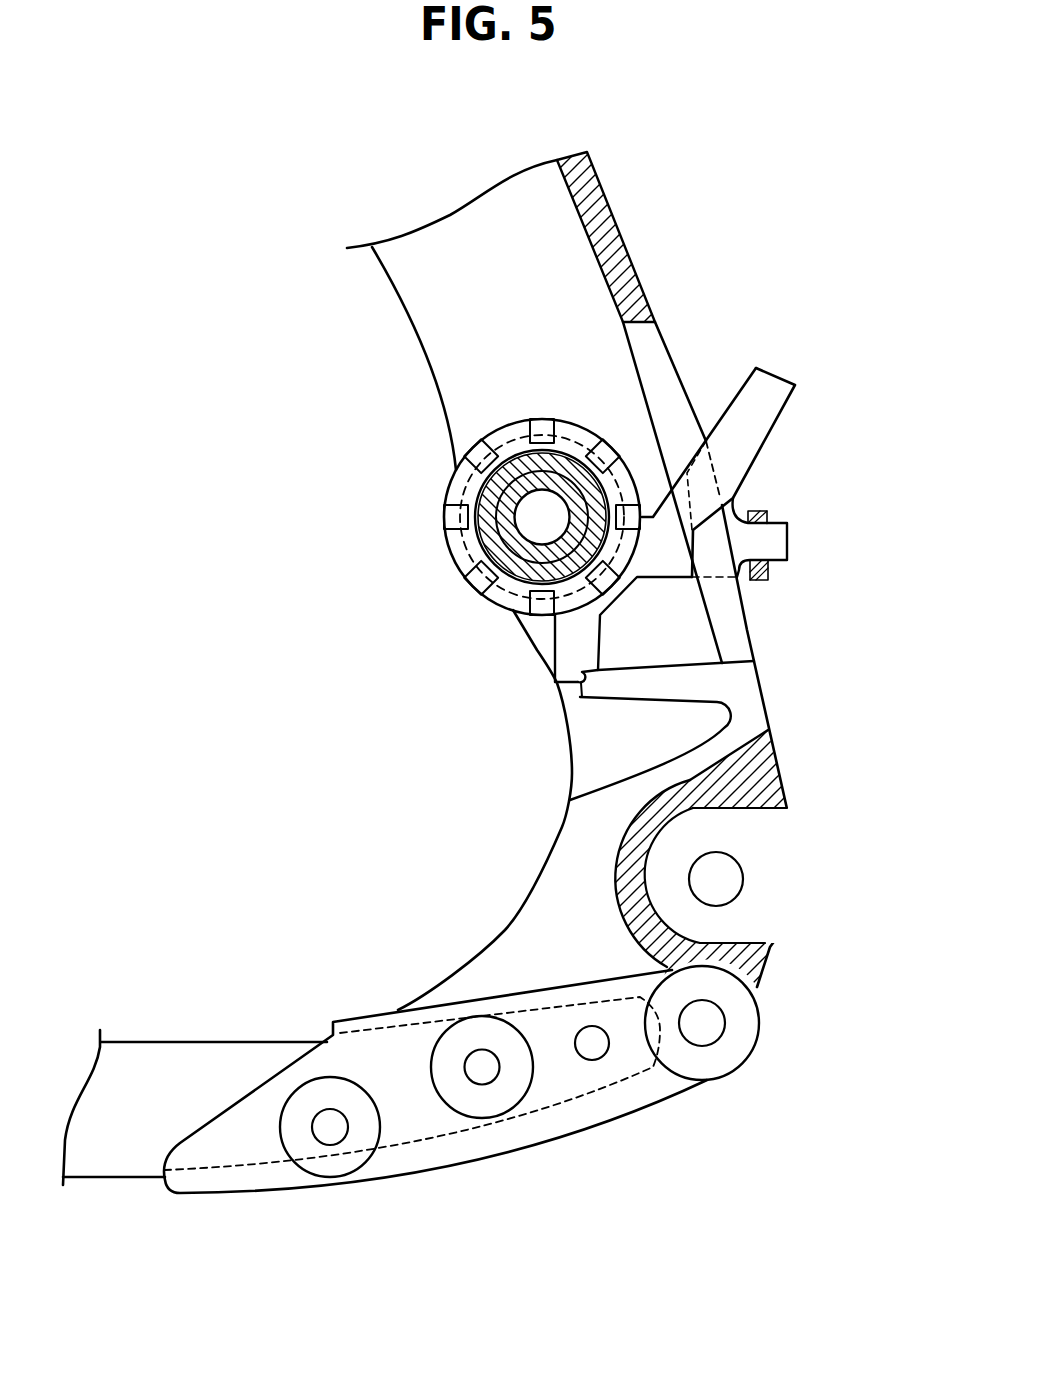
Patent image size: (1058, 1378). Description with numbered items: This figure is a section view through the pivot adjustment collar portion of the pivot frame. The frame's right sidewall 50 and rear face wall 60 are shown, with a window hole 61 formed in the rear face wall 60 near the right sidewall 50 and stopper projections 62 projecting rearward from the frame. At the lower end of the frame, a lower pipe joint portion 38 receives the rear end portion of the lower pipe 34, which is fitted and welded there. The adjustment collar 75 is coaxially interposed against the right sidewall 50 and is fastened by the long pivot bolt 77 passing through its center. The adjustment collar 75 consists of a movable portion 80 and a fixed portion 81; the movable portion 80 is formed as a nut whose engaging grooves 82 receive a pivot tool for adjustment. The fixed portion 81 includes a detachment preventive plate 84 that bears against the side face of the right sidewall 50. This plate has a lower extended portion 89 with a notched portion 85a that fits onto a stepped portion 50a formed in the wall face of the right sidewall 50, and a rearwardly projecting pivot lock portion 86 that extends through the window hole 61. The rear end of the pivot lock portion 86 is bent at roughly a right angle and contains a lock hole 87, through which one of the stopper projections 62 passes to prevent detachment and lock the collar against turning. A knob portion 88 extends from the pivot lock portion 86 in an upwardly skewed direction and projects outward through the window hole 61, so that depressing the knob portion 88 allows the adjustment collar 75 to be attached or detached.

The lower pipe 34 is at (193, 1040).
The lower pipe joint portions 38 is at (340, 1018).
The right sidewall 50 is at (427, 295).
The stepped portion 50a is at (580, 697).
The rear face wall 60 is at (640, 251).
The window hole 61 is at (676, 364).
The stopper projections 62 is at (787, 544).
The adjustment collar 75 is at (392, 576).
The pivot bolt 77 is at (557, 480).
The movable portion 80 is at (450, 487).
The fixed portion 81 is at (467, 580).
The engaging grooves 82 is at (458, 452).
The detachment preventive plate 84 is at (660, 572).
The notched portion 85a is at (576, 674).
The pivot lock portion 86 is at (760, 509).
The lock hole 87 is at (764, 526).
The knob portion 88 is at (782, 400).
The lower extended portion 89 is at (570, 647).